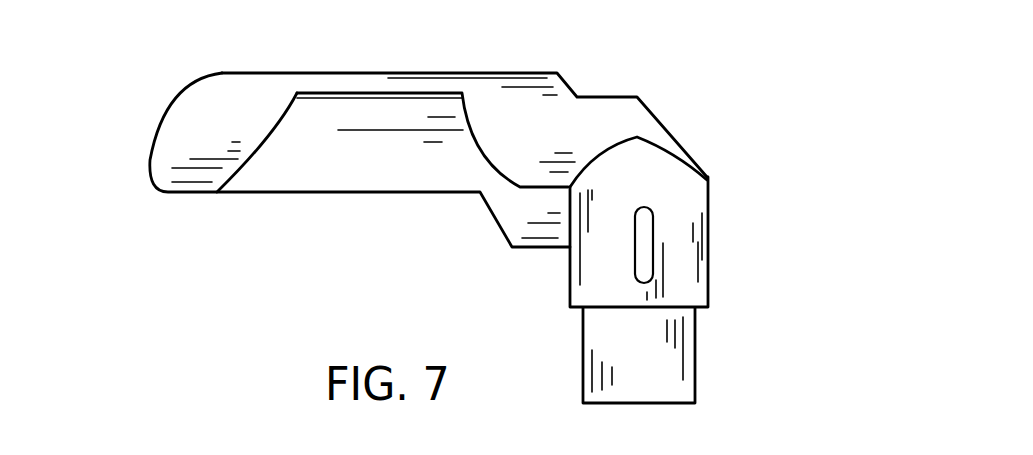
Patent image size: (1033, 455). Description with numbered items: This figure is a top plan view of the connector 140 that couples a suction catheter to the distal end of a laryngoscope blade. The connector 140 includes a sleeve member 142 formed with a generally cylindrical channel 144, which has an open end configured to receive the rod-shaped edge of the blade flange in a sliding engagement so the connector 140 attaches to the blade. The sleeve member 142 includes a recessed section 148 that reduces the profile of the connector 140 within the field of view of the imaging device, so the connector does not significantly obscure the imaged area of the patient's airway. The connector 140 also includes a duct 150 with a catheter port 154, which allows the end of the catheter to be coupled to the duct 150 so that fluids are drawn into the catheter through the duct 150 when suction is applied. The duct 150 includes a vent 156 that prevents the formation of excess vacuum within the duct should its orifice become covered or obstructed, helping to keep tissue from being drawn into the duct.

The connector 140 is at (695, 120).
The sleeve member 142 is at (523, 73).
The generally cylindrical channel 144 is at (356, 165).
The recessed section 148 is at (407, 122).
The duct 150 is at (692, 256).
The catheter port 154 is at (657, 362).
The vent 156 is at (643, 243).